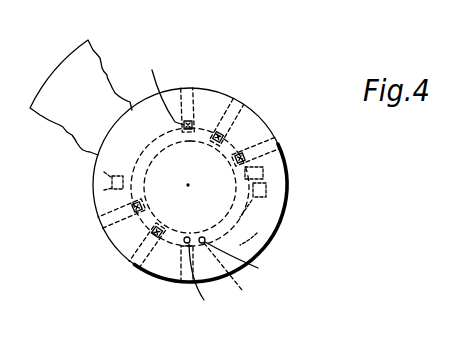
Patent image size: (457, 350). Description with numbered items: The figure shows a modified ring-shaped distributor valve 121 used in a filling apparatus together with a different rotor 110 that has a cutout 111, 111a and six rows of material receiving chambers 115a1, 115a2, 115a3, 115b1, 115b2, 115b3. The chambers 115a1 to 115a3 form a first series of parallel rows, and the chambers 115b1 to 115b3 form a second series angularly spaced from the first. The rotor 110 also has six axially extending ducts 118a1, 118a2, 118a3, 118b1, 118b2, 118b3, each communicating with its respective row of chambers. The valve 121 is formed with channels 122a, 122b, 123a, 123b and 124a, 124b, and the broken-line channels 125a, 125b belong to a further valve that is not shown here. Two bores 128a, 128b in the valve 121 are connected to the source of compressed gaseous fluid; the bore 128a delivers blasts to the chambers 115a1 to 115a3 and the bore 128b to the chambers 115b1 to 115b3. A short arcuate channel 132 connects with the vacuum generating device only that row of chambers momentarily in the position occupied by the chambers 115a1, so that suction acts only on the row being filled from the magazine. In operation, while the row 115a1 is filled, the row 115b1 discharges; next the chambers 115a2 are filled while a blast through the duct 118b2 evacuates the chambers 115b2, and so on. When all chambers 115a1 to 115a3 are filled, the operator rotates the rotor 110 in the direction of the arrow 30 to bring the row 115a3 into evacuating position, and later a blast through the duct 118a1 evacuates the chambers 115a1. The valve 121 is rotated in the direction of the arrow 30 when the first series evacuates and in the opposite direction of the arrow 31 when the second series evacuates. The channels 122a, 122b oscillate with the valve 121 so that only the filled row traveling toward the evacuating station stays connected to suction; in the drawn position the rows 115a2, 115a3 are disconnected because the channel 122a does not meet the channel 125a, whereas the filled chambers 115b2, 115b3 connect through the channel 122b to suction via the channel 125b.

The arrow 30 is at (283, 135).
The arrow 31 is at (90, 233).
The rotor 110 is at (62, 54).
The cutout 111 is at (266, 166).
The cutout 111a is at (258, 234).
The material receiving chambers 115a1 is at (190, 88).
The material receiving chambers 115a2 is at (240, 101).
The material receiving chambers 115a3 is at (277, 147).
The material receiving chambers 115b1 is at (182, 283).
The material receiving chambers 115b2 is at (134, 264).
The material receiving chambers 115b3 is at (100, 219).
The axially extending duct 118a1 is at (193, 122).
The axially extending duct 118a2 is at (215, 139).
The axially extending duct 118a3 is at (243, 153).
The axially extending duct 118b1 is at (187, 236).
The axially extending duct 118b2 is at (152, 233).
The axially extending duct 118b3 is at (141, 204).
The distributor valve 121 is at (152, 287).
The channel 122a is at (219, 187).
The channel 122b is at (137, 147).
The channel 123a is at (268, 196).
The channel 123b is at (110, 160).
The channel 124a is at (265, 176).
The channel 124b is at (104, 172).
The channel 125a is at (260, 215).
The channel 125b is at (104, 190).
The bore 128a is at (254, 262).
The bore 128b is at (216, 282).
The short arcuate channel 132 is at (153, 87).